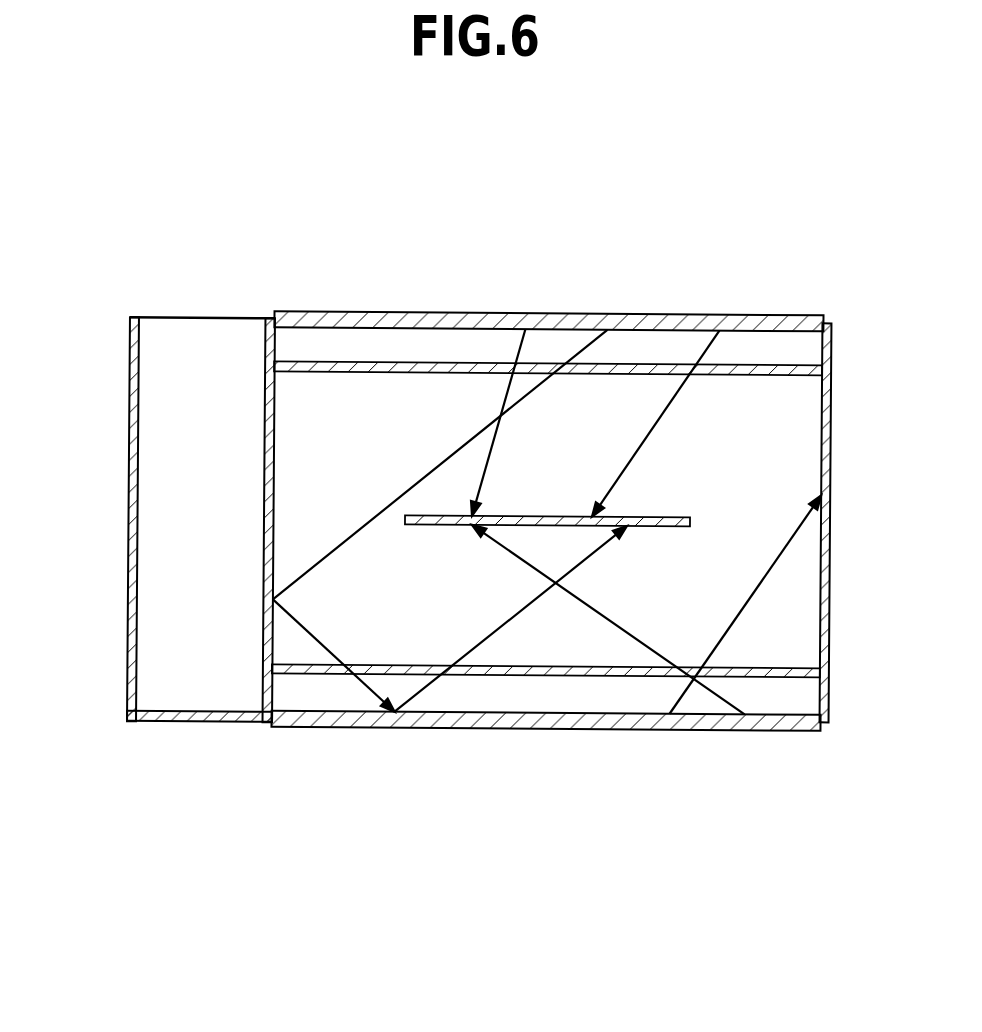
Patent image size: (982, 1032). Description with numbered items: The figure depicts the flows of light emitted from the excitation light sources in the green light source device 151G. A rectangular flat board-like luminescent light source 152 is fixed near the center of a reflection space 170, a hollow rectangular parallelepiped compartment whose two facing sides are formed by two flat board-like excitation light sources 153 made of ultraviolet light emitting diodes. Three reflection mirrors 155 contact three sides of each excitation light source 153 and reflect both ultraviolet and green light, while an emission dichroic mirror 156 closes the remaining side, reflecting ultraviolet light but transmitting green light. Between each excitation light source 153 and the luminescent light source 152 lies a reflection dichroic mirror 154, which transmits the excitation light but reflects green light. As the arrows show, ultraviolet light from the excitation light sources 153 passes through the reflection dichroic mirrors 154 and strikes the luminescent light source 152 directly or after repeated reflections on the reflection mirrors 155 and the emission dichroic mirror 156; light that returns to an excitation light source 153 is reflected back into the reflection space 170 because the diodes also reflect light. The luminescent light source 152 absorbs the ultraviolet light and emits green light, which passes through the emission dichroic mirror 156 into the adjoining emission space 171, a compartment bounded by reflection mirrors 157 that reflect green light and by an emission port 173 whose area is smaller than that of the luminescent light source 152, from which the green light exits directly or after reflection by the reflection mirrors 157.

The green light source device 151G is at (431, 760).
The luminescent light source 152 is at (573, 517).
The excitation light source 153 is at (385, 313).
The reflection dichroic mirror 154 is at (625, 372).
The reflection mirror 155 is at (826, 676).
The emission dichroic mirror 156 is at (268, 657).
The reflection mirror 157 is at (128, 442).
The reflection space 170 is at (808, 427).
The emission space 171 is at (155, 587).
The emission port 173 is at (200, 332).